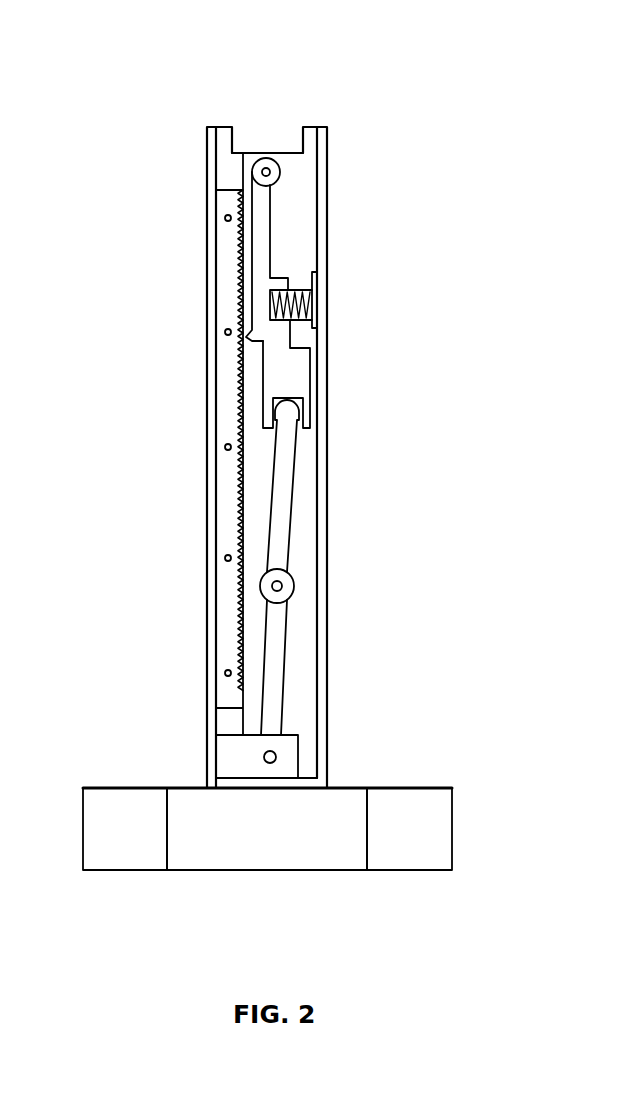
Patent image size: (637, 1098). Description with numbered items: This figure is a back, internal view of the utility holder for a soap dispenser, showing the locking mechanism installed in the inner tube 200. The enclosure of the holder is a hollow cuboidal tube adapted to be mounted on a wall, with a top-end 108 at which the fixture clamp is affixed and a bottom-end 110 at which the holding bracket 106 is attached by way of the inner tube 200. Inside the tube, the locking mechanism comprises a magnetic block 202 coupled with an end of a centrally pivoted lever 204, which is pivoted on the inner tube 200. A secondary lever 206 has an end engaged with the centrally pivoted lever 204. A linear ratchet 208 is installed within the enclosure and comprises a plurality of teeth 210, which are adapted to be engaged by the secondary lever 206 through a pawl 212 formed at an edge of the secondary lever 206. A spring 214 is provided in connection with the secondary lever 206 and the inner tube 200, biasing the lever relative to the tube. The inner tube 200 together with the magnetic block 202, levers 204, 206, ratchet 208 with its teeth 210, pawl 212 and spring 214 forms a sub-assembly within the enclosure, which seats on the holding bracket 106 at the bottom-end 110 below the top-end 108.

The holding bracket 106 is at (156, 881).
The top-end 108 is at (344, 144).
The bottom-end 110 is at (345, 760).
The inner tube 200 is at (261, 73).
The magnetic block 202 is at (234, 750).
The centrally pivoted lever 204 is at (301, 622).
The secondary lever 206 is at (258, 379).
The linear ratchet 208 is at (215, 430).
The teeth 210 is at (255, 487).
The pawl 212 is at (271, 340).
The spring 214 is at (339, 304).